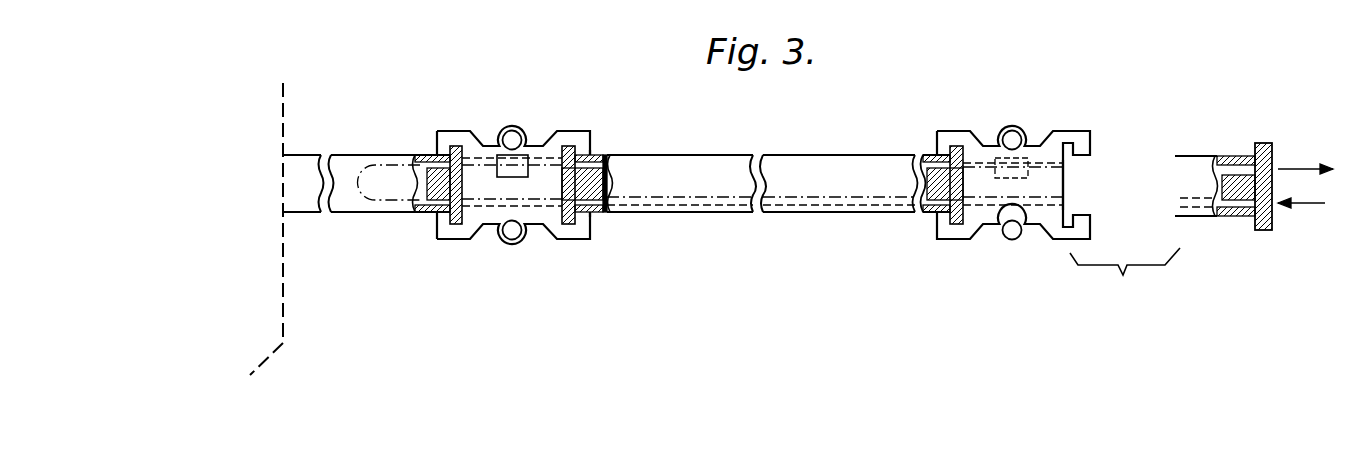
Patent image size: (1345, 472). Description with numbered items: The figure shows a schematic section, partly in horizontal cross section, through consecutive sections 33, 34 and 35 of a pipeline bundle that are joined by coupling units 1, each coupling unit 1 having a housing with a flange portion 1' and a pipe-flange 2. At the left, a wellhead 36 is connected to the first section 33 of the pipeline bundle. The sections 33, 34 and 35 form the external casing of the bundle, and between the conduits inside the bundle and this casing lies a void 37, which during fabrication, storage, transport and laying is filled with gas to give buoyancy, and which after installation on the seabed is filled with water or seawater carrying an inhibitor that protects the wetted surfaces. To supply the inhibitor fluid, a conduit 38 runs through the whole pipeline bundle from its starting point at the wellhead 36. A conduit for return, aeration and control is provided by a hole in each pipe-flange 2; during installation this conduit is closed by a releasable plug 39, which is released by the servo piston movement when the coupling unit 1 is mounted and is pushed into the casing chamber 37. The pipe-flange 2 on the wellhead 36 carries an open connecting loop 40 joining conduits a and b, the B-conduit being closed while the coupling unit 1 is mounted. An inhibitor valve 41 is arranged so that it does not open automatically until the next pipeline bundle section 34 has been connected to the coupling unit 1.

The coupling unit 1 is at (773, 151).
The housing flange 1' is at (854, 154).
The pipe-flange 2 is at (558, 131).
The section of the pipeline bundle 33 is at (390, 205).
The section of the pipeline bundle 34 is at (668, 214).
The section of the pipeline bundle 35 is at (1196, 154).
The wellhead 36 is at (283, 120).
The void 37 is at (912, 165).
The conduit 38 is at (722, 198).
The releasable plug 39 is at (607, 162).
The open connecting loop 40 is at (372, 165).
The inhibitor valve 41 is at (510, 178).